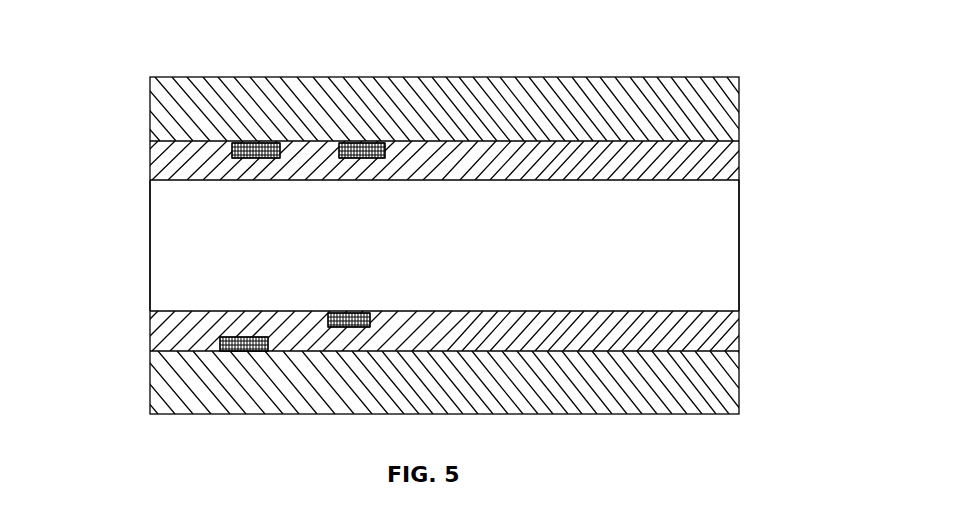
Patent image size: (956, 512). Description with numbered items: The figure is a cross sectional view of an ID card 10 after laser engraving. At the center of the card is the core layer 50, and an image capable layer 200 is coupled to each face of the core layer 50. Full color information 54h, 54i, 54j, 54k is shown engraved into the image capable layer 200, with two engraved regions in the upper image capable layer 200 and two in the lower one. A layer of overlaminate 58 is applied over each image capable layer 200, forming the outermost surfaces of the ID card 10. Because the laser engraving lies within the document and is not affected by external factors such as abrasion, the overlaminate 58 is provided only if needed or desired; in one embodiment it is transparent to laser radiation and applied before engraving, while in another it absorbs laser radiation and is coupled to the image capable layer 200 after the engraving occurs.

The ID card 10 is at (215, 58).
The overlaminate 58 is at (740, 107).
The image capable layer 200 is at (740, 165).
The core layer 50 is at (737, 250).
The full color information 54i is at (260, 157).
The full color information 54h is at (365, 157).
The full color information 54j is at (362, 312).
The full color information 54k is at (247, 337).